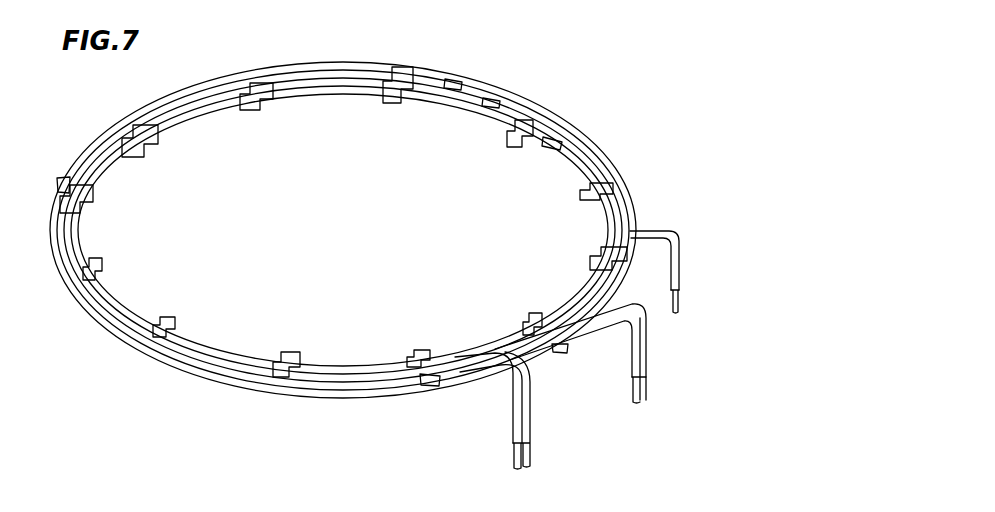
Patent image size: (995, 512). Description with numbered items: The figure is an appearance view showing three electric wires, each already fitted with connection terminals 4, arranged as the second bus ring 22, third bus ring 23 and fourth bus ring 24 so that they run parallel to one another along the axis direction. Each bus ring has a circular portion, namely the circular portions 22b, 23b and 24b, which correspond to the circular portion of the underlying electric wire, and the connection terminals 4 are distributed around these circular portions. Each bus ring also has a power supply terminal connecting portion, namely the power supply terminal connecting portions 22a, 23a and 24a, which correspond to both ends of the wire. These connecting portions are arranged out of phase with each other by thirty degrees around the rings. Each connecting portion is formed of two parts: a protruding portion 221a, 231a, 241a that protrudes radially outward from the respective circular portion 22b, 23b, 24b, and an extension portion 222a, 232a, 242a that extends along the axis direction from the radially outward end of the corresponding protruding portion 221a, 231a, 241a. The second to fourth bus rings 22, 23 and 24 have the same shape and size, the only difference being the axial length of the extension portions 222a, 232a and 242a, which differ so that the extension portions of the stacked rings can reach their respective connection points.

The connection terminal 4 is at (517, 117).
The second bus ring 22 is at (320, 395).
The third bus ring 23 is at (332, 385).
The fourth bus ring 24 is at (347, 373).
The power supply terminal connecting portion 22a is at (706, 262).
The power supply terminal connecting portion 23a is at (627, 353).
The power supply terminal connecting portion 24a is at (550, 410).
The circular portion 22b is at (552, 144).
The circular portion 23b is at (490, 103).
The circular portion 24b is at (453, 84).
The protruding portion 221a is at (655, 236).
The extension portion 222a is at (680, 250).
The protruding portion 231a is at (622, 315).
The extension portion 232a is at (640, 353).
The protruding portion 241a is at (533, 378).
The extension portion 242a is at (530, 432).